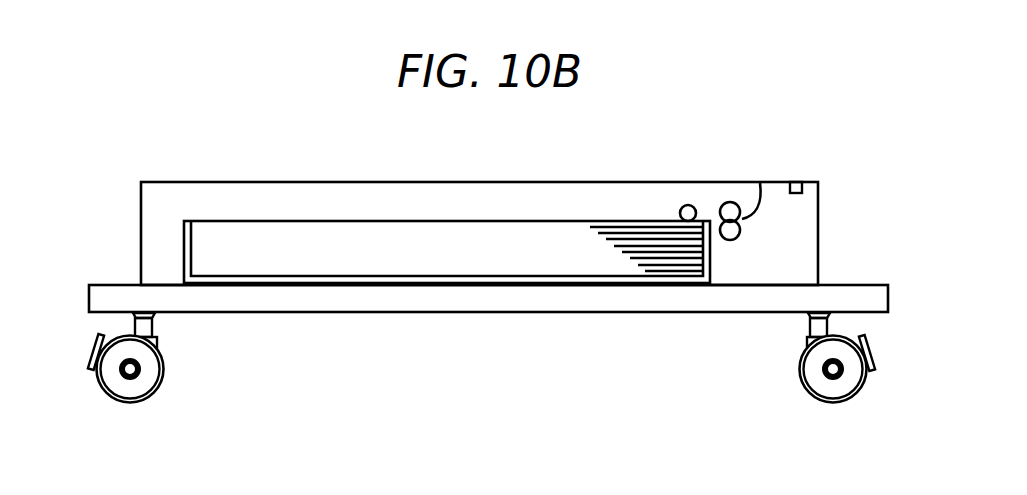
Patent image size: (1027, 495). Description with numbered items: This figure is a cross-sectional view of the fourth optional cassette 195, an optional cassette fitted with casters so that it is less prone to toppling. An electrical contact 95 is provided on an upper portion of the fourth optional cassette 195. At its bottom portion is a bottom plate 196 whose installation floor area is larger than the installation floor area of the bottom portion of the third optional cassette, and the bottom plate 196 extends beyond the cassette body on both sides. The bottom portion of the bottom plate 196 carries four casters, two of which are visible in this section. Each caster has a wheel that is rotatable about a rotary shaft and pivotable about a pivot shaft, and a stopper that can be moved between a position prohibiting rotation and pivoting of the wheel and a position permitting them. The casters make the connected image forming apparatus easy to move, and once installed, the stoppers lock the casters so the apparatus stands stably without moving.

The electrical contact 95 is at (795, 182).
The fourth optional cassette 195 is at (818, 223).
The bottom plate 196 is at (832, 285).